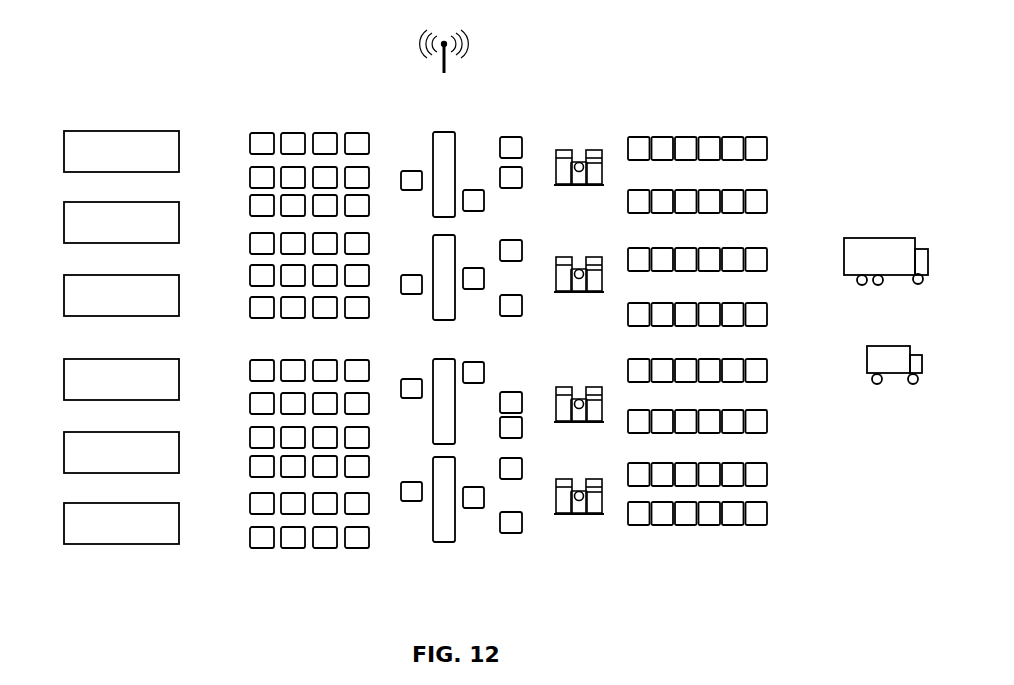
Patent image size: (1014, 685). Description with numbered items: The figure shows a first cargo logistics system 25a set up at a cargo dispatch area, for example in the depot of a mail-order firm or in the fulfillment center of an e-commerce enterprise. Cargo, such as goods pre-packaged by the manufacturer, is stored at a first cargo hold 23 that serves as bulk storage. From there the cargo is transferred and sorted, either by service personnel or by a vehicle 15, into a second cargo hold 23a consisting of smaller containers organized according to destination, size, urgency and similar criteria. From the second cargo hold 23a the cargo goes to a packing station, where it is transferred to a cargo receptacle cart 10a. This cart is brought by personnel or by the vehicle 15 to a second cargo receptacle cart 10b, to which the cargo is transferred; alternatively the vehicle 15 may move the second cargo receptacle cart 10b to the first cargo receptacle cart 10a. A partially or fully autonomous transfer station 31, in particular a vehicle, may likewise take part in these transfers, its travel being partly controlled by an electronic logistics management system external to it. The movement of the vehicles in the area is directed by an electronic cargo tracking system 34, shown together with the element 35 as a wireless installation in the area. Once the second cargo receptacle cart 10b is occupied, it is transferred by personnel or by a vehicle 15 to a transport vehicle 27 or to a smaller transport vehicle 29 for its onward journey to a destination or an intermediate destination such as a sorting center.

The cargo receptacle cart 10a is at (563, 152).
The second cargo receptacle cart 10b is at (666, 152).
The vehicle 15 is at (580, 184).
The first cargo hold 23 is at (85, 226).
The second cargo hold 23a is at (356, 142).
The cargo logistics system 25a is at (170, 101).
The transport vehicle 27 is at (880, 253).
The smaller transport vehicle 29 is at (889, 375).
The transfer station 31 is at (445, 270).
The tracking system 34 is at (466, 42).
The control server 35 is at (480, 37).